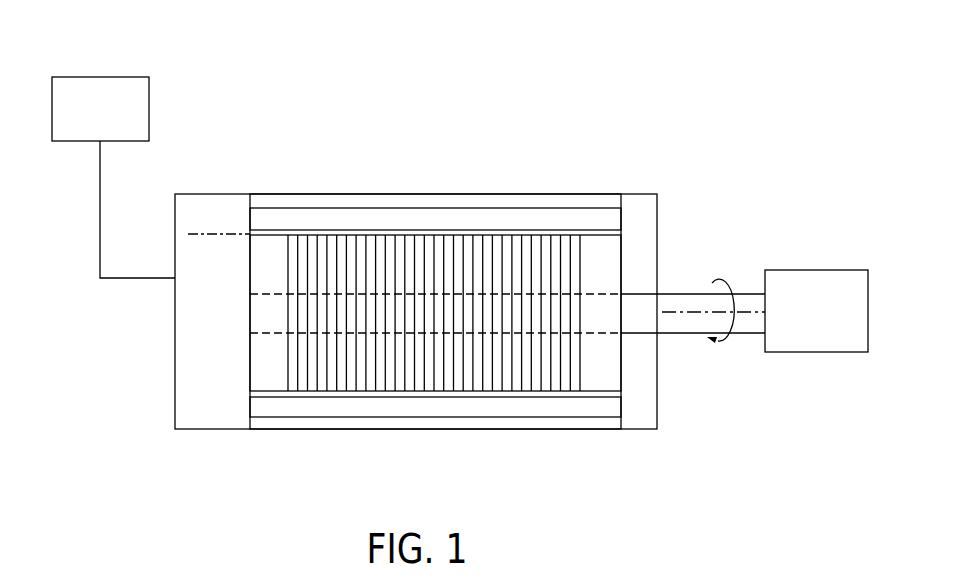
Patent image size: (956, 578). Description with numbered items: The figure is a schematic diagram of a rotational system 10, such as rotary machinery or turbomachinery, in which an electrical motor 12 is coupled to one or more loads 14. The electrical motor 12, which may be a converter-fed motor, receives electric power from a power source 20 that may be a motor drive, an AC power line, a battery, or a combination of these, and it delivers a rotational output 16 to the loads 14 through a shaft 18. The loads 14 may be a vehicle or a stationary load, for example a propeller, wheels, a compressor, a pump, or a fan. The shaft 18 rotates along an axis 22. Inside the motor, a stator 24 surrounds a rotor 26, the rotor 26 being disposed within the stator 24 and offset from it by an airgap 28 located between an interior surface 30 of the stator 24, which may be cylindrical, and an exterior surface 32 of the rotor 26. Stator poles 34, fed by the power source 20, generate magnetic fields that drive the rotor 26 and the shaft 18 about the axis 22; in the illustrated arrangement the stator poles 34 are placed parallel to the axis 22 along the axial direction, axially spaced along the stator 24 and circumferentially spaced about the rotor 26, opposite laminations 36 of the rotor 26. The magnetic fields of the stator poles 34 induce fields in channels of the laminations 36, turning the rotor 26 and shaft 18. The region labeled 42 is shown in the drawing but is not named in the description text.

The rotational system 10 is at (590, 88).
The electrical motor 12 is at (201, 186).
The loads 14 is at (830, 270).
The rotational output 16 is at (720, 272).
The shaft 18 is at (752, 292).
The power source 20 is at (100, 77).
The axis 22 is at (683, 300).
The stator 24 is at (595, 205).
The rotor 26 is at (617, 250).
The airgap 28 is at (241, 228).
The interior surface 30 is at (442, 210).
The exterior surface 32 is at (259, 241).
The stator poles 34 is at (511, 199).
The laminations 36 is at (280, 378).
The gap 42 is at (282, 268).